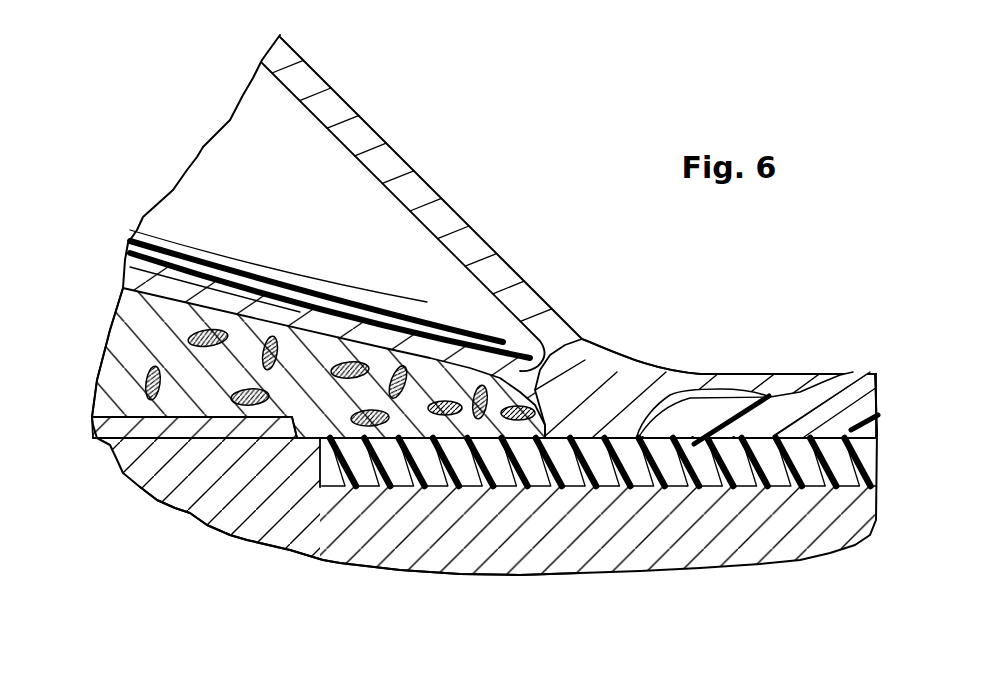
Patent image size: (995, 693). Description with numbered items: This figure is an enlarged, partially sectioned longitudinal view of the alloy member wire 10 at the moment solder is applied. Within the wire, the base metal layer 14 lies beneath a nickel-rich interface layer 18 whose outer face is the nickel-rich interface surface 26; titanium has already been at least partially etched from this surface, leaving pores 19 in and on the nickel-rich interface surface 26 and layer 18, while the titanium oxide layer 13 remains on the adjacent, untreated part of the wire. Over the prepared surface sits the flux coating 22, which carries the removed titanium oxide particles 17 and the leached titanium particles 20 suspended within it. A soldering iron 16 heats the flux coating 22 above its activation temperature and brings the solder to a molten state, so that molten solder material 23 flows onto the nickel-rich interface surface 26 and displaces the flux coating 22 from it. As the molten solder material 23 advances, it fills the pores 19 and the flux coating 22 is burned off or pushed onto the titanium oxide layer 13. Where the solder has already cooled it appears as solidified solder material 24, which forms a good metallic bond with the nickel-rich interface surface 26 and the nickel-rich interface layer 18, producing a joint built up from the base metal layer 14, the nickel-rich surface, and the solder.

The alloy member wire 10 is at (675, 602).
The titanium oxide layer 13 is at (102, 380).
The base metal layer 14 is at (165, 493).
The soldering iron 16 is at (360, 195).
The titanium oxide particles 17 is at (452, 414).
The nickel-rich interface layer 18 is at (283, 548).
The pores 19 is at (540, 440).
The leached titanium particles 20 is at (488, 414).
The flux coating 22 is at (118, 335).
The molten solder material 23 is at (577, 350).
The solidified solder material 24 is at (700, 405).
The nickel-rich interface surface 26 is at (602, 392).